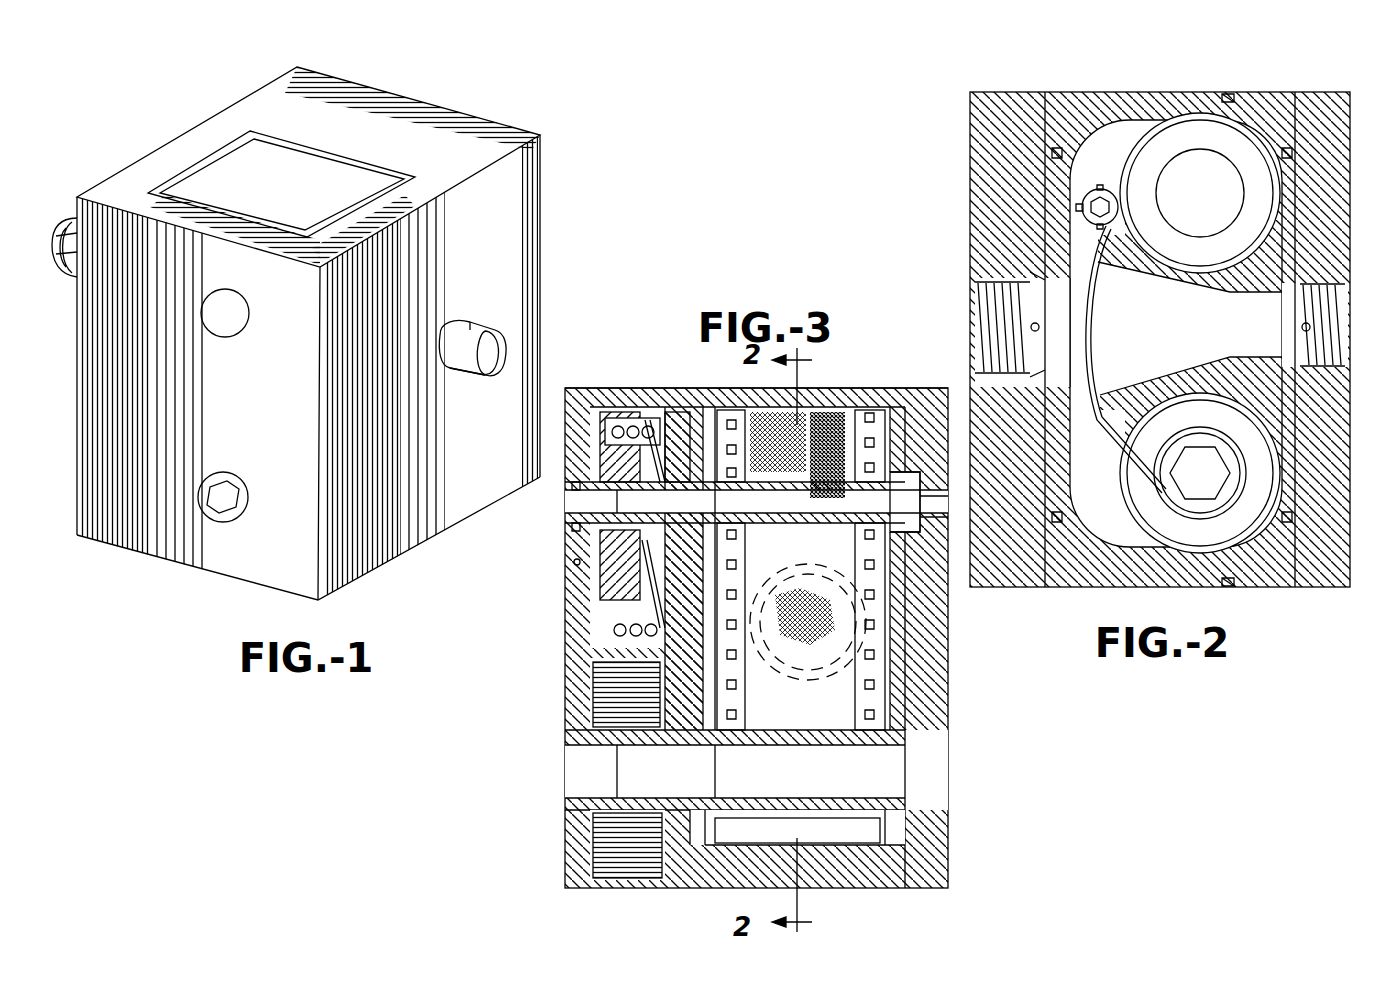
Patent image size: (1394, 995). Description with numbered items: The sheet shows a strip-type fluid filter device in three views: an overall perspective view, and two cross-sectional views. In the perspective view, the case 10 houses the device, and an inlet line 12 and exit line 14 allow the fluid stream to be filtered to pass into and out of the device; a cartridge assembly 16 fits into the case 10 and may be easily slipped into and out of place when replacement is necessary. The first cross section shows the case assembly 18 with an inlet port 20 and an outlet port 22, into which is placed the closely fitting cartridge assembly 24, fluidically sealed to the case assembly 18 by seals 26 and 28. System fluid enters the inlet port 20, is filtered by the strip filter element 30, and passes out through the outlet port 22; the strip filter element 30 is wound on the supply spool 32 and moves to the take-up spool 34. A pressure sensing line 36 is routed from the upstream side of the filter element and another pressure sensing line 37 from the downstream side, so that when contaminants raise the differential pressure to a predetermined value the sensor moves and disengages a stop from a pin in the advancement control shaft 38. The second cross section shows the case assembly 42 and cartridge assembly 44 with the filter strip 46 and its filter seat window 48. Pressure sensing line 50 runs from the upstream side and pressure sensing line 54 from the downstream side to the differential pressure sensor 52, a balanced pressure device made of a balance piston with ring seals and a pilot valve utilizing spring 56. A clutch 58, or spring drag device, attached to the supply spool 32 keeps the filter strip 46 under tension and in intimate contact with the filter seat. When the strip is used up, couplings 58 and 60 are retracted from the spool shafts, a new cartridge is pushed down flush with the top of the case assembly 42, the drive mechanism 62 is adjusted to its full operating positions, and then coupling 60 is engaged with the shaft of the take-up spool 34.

In FIG. 1, the case 10 is at (542, 210).
In FIG. 1, the inlet line 12 is at (60, 216).
In FIG. 1, the exit line 14 is at (512, 373).
In FIG. 1, the cartridge assembly 16 is at (200, 560).
In FIG. 2, the case assembly 18 is at (993, 572).
In FIG. 2, the inlet port 20 is at (968, 338).
In FIG. 2, the outlet port 22 is at (1341, 323).
In FIG. 2, the cartridge assembly 24 is at (1153, 92).
In FIG. 2, the seal 26 is at (1300, 147).
In FIG. 2, the seal 28 is at (1297, 525).
In FIG. 2, the strip filter element 30 is at (1120, 443).
In FIG. 2, the supply spool 32 is at (1220, 143).
In FIG. 2, the take-up spool 34 is at (1198, 530).
In FIG. 2, the pressure sensing line 36 is at (1031, 326).
In FIG. 2, the pressure sensing line 37 is at (1303, 325).
In FIG. 2, the advancement control shaft 38 is at (1093, 203).
In FIG. 3, the case assembly 42 is at (940, 698).
In FIG. 3, the cartridge assembly 44 is at (833, 390).
In FIG. 3, the filter strip 46 is at (845, 683).
In FIG. 3, the filter seat window 48 is at (828, 637).
In FIG. 3, the pressure sensing line 50 is at (572, 562).
In FIG. 3, the differential pressure sensor 52 is at (650, 400).
In FIG. 3, the pressure sensing line 54 is at (600, 590).
In FIG. 3, the spring 56 is at (648, 400).
In FIG. 3, the clutch 58 is at (715, 492).
In FIG. 3, the coupling 60 is at (717, 777).
In FIG. 3, the drive mechanism 62 is at (635, 862).